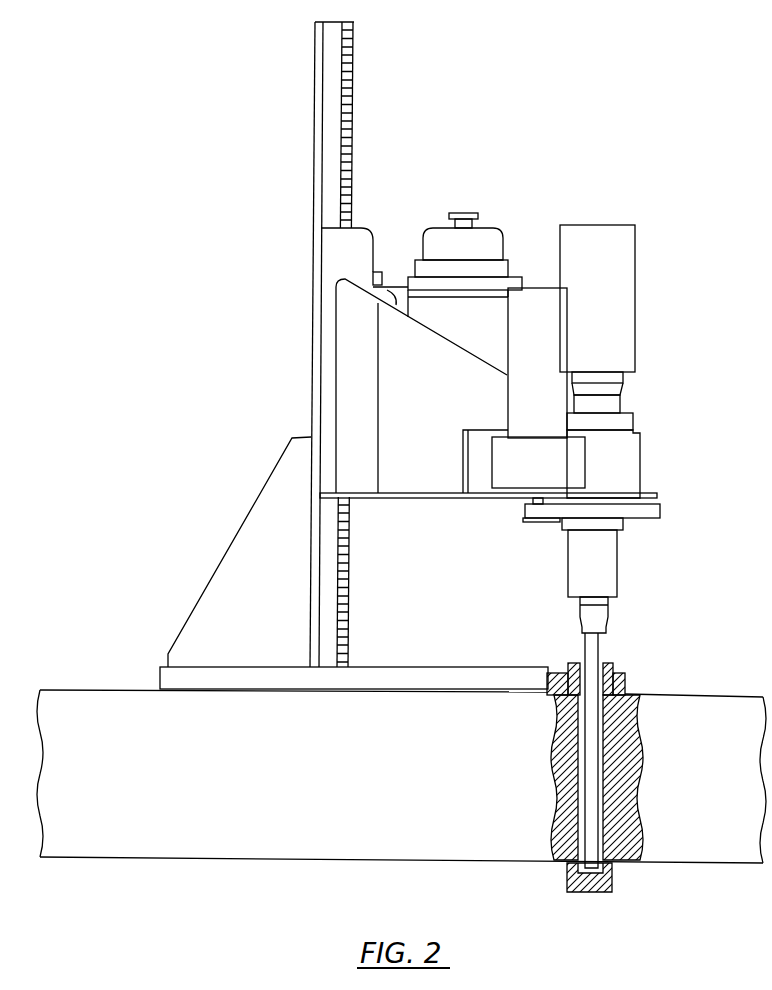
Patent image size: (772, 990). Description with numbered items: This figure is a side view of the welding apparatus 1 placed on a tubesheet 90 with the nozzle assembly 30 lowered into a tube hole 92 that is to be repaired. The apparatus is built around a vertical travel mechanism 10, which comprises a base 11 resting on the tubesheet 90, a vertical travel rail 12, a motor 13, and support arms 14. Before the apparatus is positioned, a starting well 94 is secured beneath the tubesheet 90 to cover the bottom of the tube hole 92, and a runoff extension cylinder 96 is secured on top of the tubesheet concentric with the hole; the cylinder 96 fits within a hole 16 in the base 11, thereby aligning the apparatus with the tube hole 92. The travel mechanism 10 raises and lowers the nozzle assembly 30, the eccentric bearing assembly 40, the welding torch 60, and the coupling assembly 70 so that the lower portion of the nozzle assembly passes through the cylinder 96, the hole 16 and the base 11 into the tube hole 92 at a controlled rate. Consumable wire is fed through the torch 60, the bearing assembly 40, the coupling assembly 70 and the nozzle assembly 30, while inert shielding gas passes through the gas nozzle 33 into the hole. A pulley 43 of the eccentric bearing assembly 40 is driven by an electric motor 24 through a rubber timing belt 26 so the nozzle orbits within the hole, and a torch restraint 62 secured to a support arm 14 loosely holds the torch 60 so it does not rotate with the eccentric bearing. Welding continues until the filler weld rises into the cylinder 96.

The welding apparatus 1 is at (665, 196).
The vertical travel mechanism 10 is at (278, 238).
The base 11 is at (212, 665).
The vertical travel rail 12 is at (312, 308).
The motor 13 is at (497, 228).
The support arms 14 is at (335, 363).
The hole 16 is at (605, 662).
The electric motor 24 is at (507, 420).
The rubber timing belt 26 is at (556, 522).
The nozzle assembly 30 is at (567, 655).
The gas nozzle 33 is at (592, 793).
The eccentric bearing assembly 40 is at (678, 446).
The pulley 43 is at (650, 500).
The welding torch 60 is at (672, 263).
The torch restraint 62 is at (395, 283).
The coupling assembly 70 is at (660, 581).
The tubesheet 90 is at (401, 776).
The tube hole 92 is at (600, 750).
The starting well 94 is at (612, 888).
The runoff extension cylinder 96 is at (613, 668).